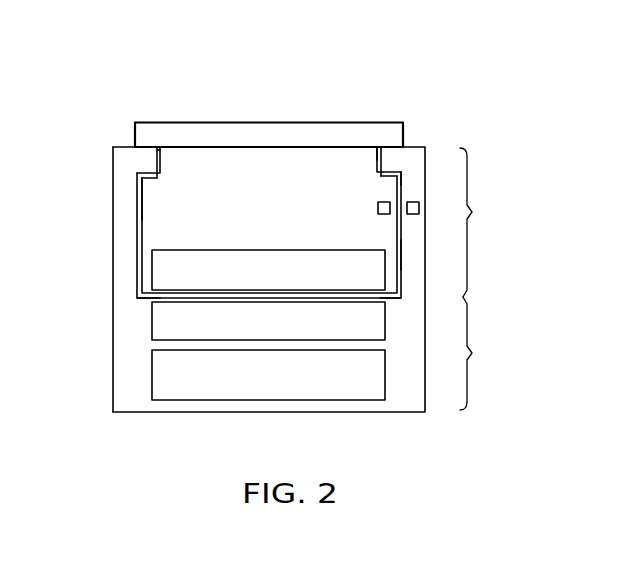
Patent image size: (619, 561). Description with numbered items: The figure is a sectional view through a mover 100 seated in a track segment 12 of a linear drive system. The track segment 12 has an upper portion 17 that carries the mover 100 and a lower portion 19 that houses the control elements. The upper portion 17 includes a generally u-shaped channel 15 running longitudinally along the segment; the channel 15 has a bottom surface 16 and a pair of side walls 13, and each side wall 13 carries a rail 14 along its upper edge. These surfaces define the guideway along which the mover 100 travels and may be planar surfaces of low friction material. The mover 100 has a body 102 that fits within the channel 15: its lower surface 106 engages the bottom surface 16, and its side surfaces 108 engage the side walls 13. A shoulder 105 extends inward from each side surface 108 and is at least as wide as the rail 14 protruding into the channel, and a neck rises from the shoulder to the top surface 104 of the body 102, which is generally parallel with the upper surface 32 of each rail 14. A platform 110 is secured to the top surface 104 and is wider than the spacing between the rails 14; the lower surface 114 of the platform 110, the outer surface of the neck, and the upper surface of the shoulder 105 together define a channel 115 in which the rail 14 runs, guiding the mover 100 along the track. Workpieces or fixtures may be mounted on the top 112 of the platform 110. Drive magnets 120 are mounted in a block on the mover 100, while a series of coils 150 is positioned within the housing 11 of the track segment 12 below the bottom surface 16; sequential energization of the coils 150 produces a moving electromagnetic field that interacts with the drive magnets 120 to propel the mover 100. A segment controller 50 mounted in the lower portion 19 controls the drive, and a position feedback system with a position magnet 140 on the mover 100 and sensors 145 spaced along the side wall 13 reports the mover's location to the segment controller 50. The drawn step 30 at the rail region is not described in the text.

The mover 100 is at (163, 114).
The housing 11 is at (130, 383).
The track segment 12 is at (104, 321).
The side wall 13 is at (132, 228).
The rail 14 is at (137, 162).
The channel 15 is at (140, 180).
The bottom surface 16 is at (130, 299).
The upper portion 17 is at (471, 212).
The lower portion 19 is at (471, 354).
The inner step 30 is at (145, 178).
The upper surface 32 is at (160, 164).
The segment controller 50 is at (286, 387).
The body 102 is at (258, 162).
The top surface 104 is at (343, 152).
The shoulder 105 is at (380, 173).
The lower surface 106 is at (400, 308).
The side surface 108 is at (402, 257).
The platform 110 is at (378, 145).
The top 112 is at (212, 121).
The lower surface 114 is at (382, 142).
The channel 115 is at (376, 144).
The drive magnets 120 is at (220, 262).
The position magnet 140 is at (386, 202).
The sensor 145 is at (413, 200).
The coils 150 is at (291, 332).